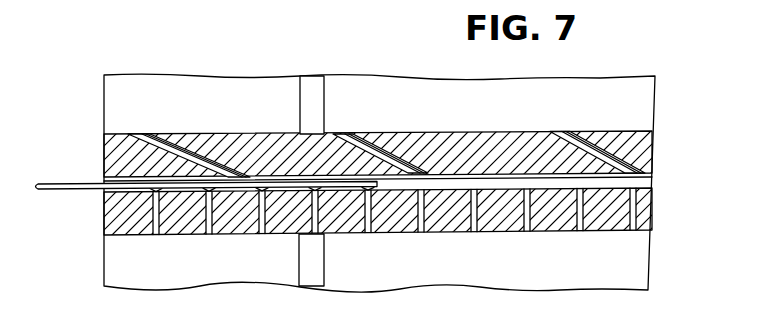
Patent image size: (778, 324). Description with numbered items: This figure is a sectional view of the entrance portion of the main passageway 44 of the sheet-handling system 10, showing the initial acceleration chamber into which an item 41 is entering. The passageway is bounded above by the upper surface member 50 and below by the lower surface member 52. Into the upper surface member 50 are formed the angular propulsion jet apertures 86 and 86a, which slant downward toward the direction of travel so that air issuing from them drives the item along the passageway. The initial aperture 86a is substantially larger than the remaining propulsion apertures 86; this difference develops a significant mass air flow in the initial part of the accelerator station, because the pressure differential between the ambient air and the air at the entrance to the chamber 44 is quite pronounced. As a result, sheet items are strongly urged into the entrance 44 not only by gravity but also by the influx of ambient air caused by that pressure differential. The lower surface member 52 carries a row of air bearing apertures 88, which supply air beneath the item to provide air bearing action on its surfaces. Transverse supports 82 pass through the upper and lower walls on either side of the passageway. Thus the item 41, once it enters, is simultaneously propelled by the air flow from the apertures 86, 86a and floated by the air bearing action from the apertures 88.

The connector assembly 10 is at (172, 70).
The item 41 is at (70, 183).
The main passageway 44 is at (637, 178).
The upper surface member 50 is at (612, 133).
The lower surface member 52 is at (391, 235).
The support pillar 82 is at (297, 97).
The propulsion aperture 86 is at (345, 135).
The initial propulsion jet aperture 86a is at (127, 150).
The air bearing aperture 88 is at (418, 233).